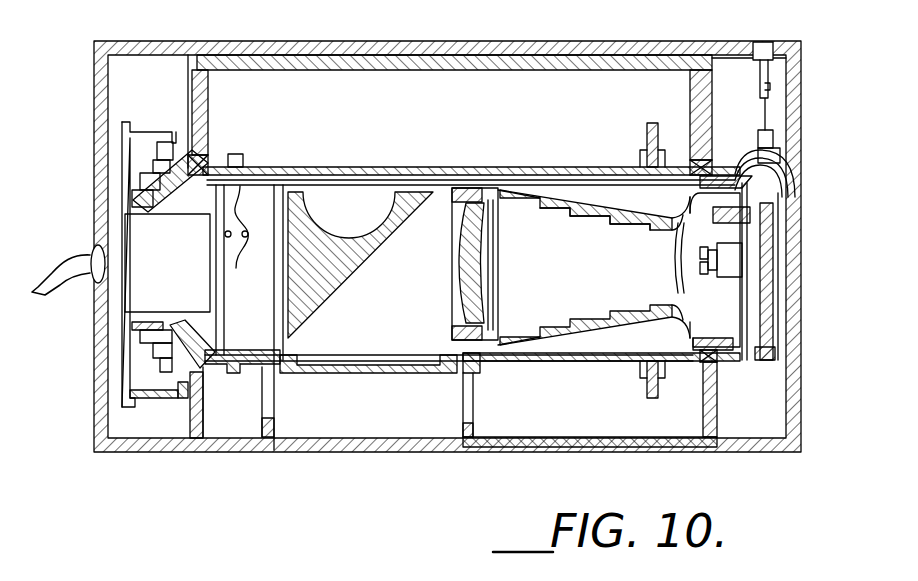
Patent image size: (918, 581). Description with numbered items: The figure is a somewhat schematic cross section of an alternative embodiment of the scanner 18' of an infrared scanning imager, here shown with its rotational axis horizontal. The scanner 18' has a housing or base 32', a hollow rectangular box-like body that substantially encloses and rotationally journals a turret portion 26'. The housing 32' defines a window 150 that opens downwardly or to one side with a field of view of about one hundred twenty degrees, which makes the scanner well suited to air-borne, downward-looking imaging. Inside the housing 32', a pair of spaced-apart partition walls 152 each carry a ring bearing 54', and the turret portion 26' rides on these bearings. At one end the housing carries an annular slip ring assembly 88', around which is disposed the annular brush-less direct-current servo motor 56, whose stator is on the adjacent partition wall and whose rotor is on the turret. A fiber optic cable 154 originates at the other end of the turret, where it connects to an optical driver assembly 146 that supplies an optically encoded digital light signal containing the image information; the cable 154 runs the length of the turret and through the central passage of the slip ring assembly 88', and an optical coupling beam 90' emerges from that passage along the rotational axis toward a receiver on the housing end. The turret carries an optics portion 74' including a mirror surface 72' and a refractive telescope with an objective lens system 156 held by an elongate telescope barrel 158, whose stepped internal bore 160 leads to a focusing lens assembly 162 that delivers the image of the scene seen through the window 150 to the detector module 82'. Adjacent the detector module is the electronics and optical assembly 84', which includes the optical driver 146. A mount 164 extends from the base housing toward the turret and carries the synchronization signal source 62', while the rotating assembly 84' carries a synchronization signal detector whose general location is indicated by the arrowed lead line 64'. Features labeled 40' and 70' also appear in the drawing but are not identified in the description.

The scanner 18' is at (122, 501).
The turret portion 26' is at (470, 245).
The housing or base 32' is at (447, 230).
The light beam 40' is at (53, 273).
The ring bearing 54' is at (197, 166).
The annular brush-less direct-current servo motor 56 is at (160, 340).
The synchronization signal source 62' is at (807, 129).
The synchronization signal detector 64' is at (808, 150).
The base plate 70' is at (365, 317).
The mirror surface 72' is at (360, 265).
The optics portion 74' is at (553, 236).
The detector module 82' is at (768, 302).
The electronics and optical assembly 84' is at (790, 173).
The annular slip ring assembly 88' is at (137, 264).
The optical coupling beam 90' is at (77, 250).
The optical driver assembly 146 is at (780, 196).
The window 150 is at (455, 452).
The partition walls 152 is at (208, 101).
The fiber optic cable 154 is at (236, 268).
The objective lens system 156 is at (443, 312).
The telescope barrel 158 is at (553, 320).
The stepped internal bore 160 is at (616, 226).
The focusing lens assembly 162 is at (686, 263).
The mount 164 is at (768, 76).